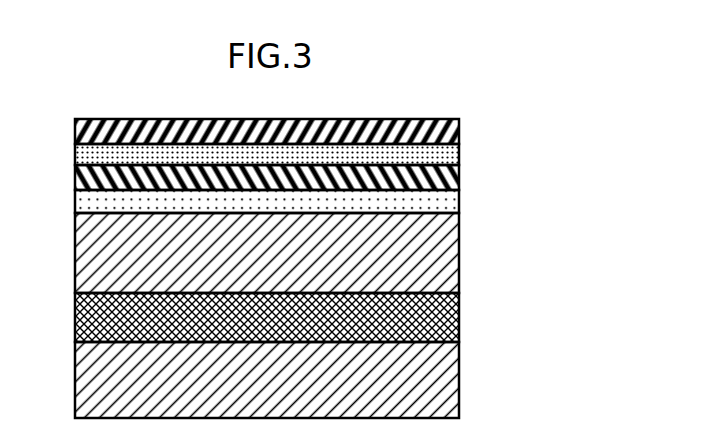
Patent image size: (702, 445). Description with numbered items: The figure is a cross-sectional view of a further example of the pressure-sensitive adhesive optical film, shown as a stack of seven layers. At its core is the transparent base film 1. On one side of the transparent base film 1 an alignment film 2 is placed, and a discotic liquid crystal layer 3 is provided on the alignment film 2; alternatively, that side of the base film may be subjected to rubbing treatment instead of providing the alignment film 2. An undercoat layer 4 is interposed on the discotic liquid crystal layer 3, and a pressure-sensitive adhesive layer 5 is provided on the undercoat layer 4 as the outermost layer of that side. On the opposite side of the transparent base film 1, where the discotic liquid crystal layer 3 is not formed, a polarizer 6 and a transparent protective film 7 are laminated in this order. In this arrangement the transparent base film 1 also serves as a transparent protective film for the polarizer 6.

The transparent base film 1 is at (433, 282).
The alignment film 2 is at (430, 204).
The discotic liquid crystal layer 3 is at (437, 173).
The undercoat layer 4 is at (433, 148).
The pressure-sensitive adhesive layer 5 is at (437, 126).
The polarizer 6 is at (433, 320).
The transparent protective film 7 is at (437, 405).